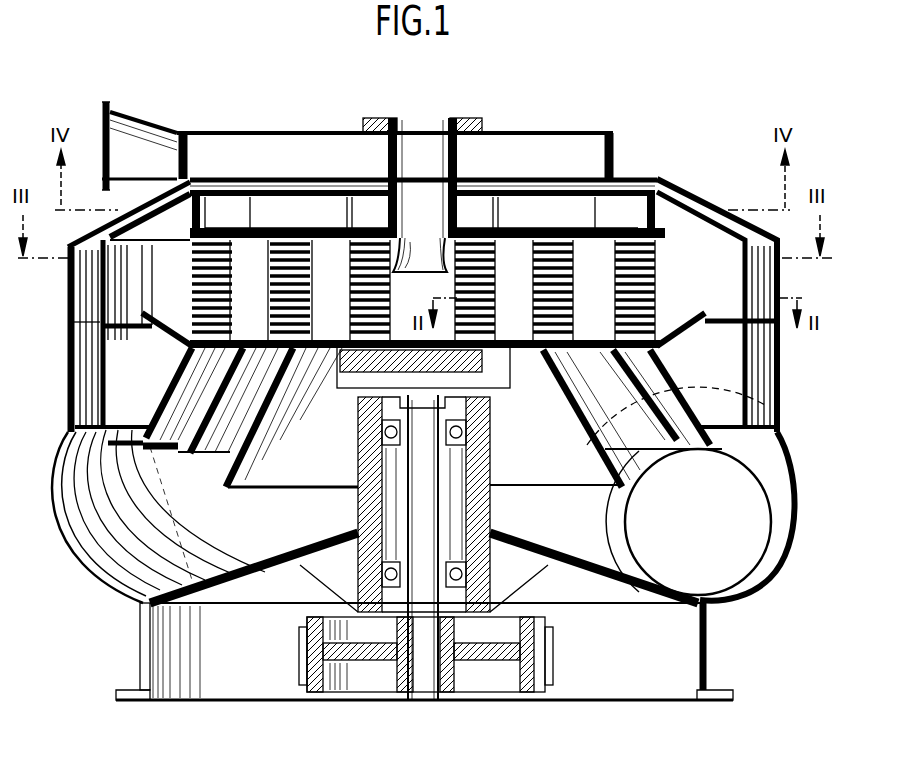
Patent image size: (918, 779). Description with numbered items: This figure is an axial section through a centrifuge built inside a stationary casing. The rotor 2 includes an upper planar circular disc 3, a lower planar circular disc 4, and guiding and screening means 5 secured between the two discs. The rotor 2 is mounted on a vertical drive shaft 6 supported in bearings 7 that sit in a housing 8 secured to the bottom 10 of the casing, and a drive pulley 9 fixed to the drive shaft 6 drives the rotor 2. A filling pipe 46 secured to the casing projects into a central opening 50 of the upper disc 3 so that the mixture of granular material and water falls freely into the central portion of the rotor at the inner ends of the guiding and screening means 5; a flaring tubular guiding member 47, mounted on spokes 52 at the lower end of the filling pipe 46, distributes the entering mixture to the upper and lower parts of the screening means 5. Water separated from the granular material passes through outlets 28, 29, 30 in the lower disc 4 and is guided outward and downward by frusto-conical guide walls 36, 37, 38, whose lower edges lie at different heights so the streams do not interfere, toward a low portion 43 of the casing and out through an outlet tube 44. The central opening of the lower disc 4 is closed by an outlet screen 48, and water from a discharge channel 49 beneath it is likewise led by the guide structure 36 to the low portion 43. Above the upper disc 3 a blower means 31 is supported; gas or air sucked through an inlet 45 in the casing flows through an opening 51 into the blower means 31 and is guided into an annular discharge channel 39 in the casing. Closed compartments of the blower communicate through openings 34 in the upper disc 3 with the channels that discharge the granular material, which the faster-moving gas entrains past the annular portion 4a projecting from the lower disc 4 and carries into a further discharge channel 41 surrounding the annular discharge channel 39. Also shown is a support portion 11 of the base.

The inlet 45 is at (220, 146).
The filling pipe 46 is at (458, 150).
The opening 51 is at (378, 190).
The spokes 52 is at (407, 236).
The central opening 50 is at (462, 236).
The upper planar circular disc 3 is at (270, 233).
The blower means 31 is at (202, 213).
The openings 34 is at (658, 234).
The annular discharge channel 39 is at (118, 272).
The rotor 2 is at (182, 278).
The guiding and screening means 5 is at (352, 306).
The flaring tubular guiding member 47 is at (410, 271).
The discharge channel 41 is at (82, 305).
The annular portion 4a is at (168, 342).
The lower planar circular disc 4 is at (250, 350).
The discharge channel 49 is at (345, 360).
The outlet screen 48 is at (420, 350).
The outlet 28 is at (571, 378).
The outlet 29 is at (572, 362).
The outlet 30 is at (660, 350).
The bearings 7 is at (470, 440).
The frusto-conical guide wall 38 is at (147, 447).
The frusto-conical guide wall 37 is at (190, 453).
The frusto-conical guide wall 36 is at (236, 487).
The vertical drive shaft 6 is at (417, 494).
The housing 8 is at (475, 518).
The low portion 43 is at (102, 589).
The bottom 10 is at (217, 590).
The outlet tube 44 is at (755, 557).
The support leg 11 is at (710, 661).
The drive pulley 9 is at (538, 684).